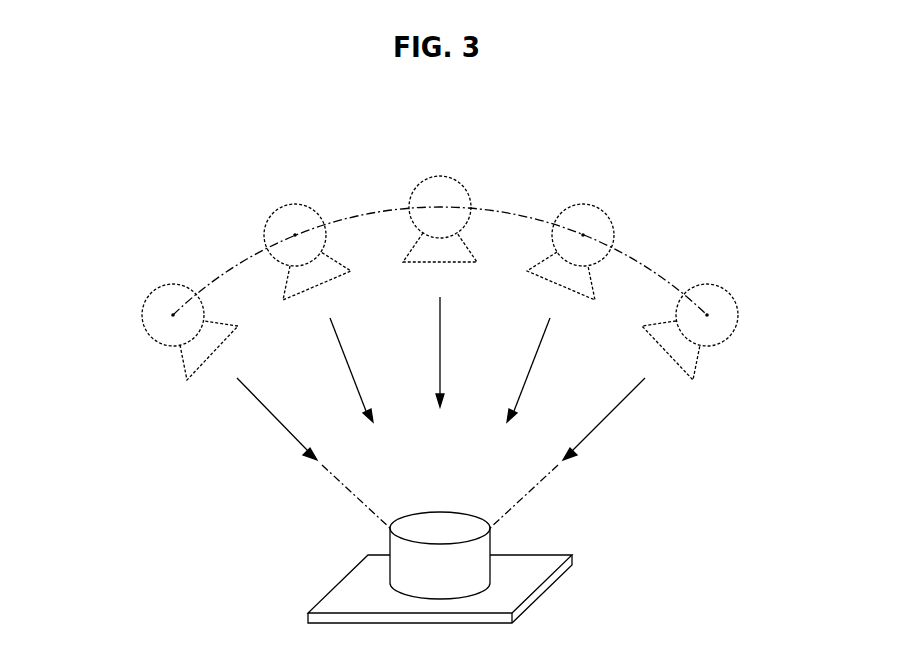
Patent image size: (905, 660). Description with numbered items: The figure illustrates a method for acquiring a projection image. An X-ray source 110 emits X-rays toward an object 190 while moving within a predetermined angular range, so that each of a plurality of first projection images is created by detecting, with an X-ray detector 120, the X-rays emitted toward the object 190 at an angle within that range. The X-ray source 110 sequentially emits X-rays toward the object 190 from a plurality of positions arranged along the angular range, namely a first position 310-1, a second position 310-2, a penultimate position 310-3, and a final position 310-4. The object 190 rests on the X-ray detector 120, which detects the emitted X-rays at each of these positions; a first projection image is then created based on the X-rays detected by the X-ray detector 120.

The X-ray source 110 is at (440, 177).
The first position 310-1 is at (173, 315).
The second position 310-2 is at (295, 235).
The (n-1)th position 310-3 is at (583, 235).
The nth position 310-4 is at (707, 315).
The object 190 is at (472, 522).
The X-ray detector 120 is at (540, 575).